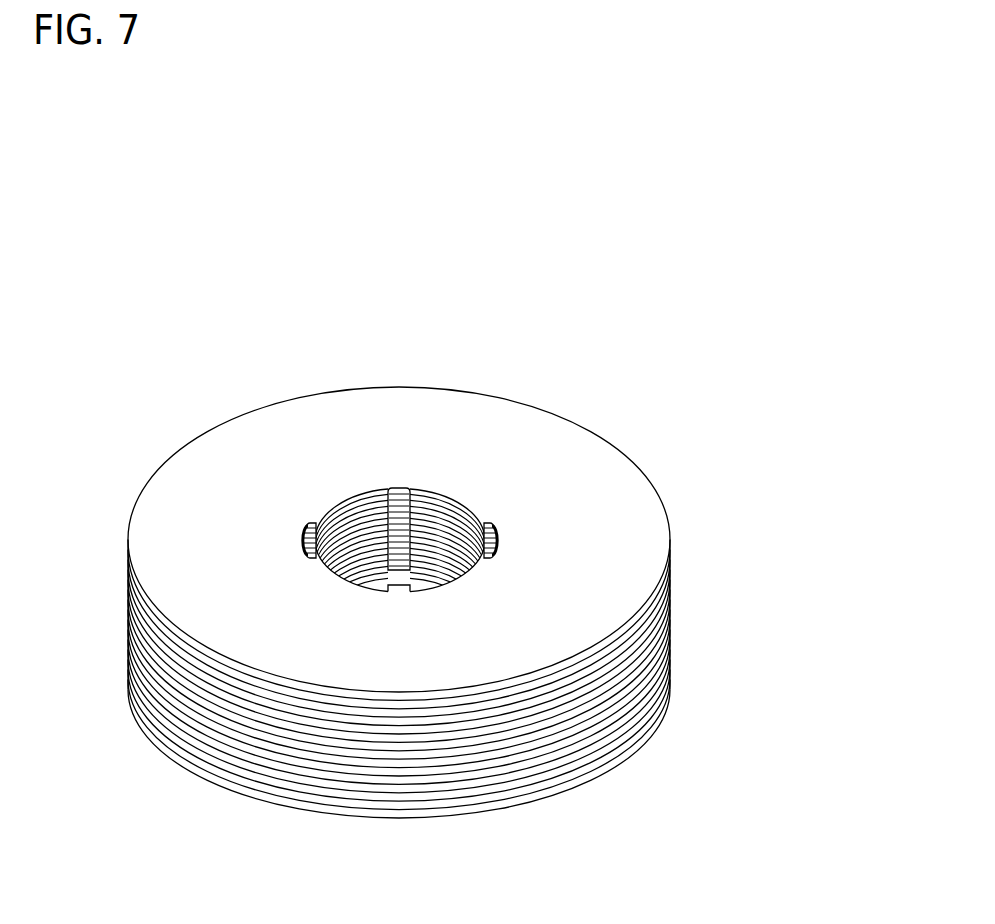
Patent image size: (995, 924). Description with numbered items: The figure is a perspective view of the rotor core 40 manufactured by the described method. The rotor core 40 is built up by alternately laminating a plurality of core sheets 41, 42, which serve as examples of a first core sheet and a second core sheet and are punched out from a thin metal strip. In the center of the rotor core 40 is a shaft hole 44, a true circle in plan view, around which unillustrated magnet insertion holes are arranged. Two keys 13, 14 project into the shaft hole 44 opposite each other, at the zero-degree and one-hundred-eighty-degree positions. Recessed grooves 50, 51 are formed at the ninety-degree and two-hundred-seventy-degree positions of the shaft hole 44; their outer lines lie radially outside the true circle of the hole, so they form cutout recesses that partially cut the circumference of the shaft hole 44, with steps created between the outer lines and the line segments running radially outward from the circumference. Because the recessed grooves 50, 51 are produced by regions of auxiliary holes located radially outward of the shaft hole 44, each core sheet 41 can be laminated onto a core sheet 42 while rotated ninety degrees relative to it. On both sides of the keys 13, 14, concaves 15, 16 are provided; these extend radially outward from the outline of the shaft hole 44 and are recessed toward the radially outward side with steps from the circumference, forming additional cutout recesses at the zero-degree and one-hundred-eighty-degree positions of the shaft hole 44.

The key 13 is at (511, 597).
The key 14 is at (403, 580).
The concave 15 is at (359, 498).
The concave 16 is at (431, 488).
The rotor core 40 is at (403, 626).
The core sheet 41 is at (292, 790).
The core sheet 42 is at (243, 770).
The shaft hole 44 is at (482, 520).
The recessed groove 50 is at (325, 503).
The recessed groove 51 is at (477, 573).